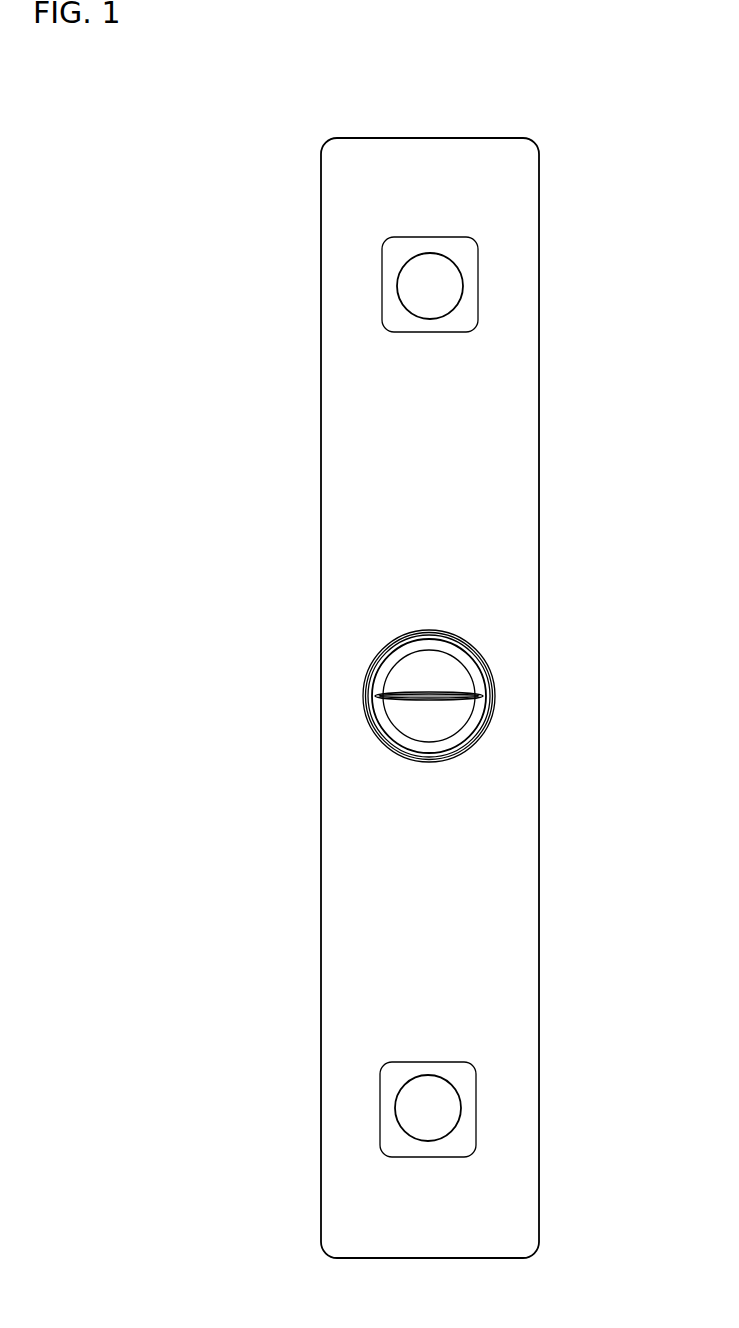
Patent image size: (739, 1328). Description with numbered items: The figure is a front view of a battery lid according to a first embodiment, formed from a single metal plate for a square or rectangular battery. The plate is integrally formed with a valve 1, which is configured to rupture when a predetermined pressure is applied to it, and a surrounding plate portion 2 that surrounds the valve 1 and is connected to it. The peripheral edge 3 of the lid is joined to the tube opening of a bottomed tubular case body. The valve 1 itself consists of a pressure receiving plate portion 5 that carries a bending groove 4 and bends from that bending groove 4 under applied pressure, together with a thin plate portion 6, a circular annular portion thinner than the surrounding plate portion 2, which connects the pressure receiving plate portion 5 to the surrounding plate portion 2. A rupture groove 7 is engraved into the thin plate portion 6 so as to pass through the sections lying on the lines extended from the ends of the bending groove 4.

The valve 1 is at (480, 652).
The surrounding plate portion 2 is at (356, 608).
The peripheral edge 3 is at (539, 480).
The bending groove 4 is at (403, 698).
The pressure receiving plate portion 5 is at (397, 670).
The thin plate portion 6 is at (487, 672).
The rupture groove 7 is at (490, 712).